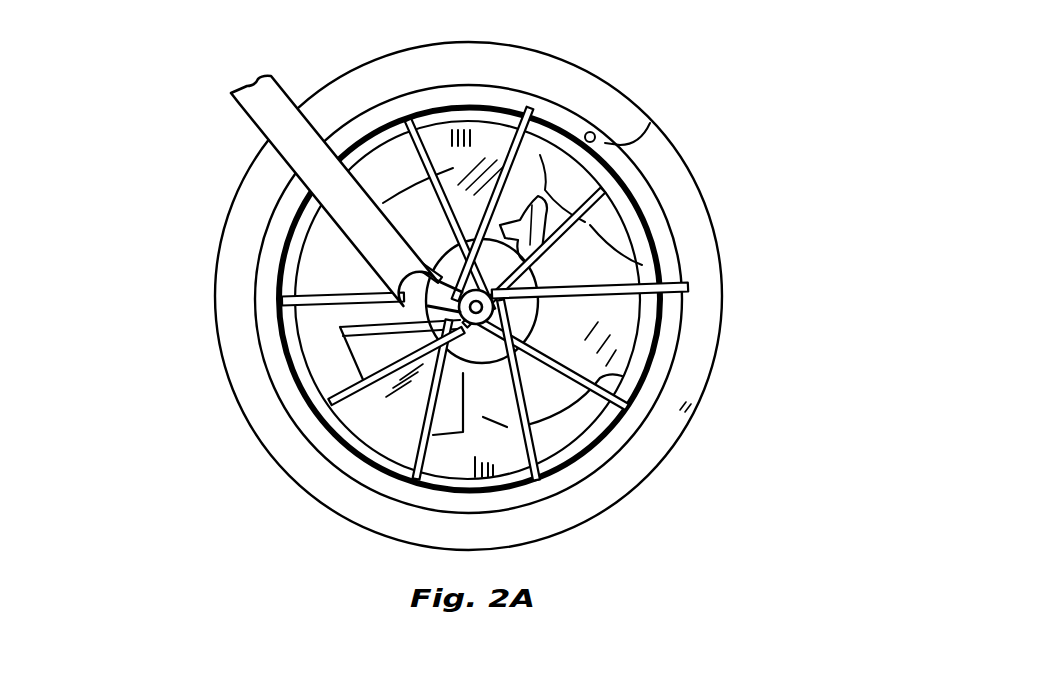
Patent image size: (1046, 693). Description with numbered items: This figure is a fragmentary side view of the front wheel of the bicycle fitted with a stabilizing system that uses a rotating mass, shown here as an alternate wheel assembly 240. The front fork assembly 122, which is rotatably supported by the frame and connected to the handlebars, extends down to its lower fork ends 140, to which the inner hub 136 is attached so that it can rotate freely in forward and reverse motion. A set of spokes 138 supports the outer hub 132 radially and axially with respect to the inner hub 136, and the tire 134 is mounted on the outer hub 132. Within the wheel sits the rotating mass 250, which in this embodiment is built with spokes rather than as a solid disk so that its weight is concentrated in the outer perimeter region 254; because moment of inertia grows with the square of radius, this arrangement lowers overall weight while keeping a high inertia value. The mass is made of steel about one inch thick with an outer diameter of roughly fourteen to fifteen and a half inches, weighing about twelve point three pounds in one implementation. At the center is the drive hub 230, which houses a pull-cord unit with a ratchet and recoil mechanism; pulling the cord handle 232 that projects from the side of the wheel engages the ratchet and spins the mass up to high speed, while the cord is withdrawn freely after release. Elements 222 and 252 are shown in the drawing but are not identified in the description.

The front fork assembly 122 is at (256, 124).
The outer hub 132 is at (665, 243).
The tire 134 is at (518, 62).
The inner hub 136 is at (312, 390).
The spokes 138 is at (690, 292).
The lower fork ends 140 is at (340, 328).
The scoop blade 222 is at (600, 192).
The drive hub 230 is at (433, 243).
The cord handle 232 is at (585, 88).
The wheel assembly 240 is at (673, 193).
The rotating mass 250 is at (572, 188).
The cup bottom 252 is at (540, 435).
The outer perimeter region 254 is at (545, 433).